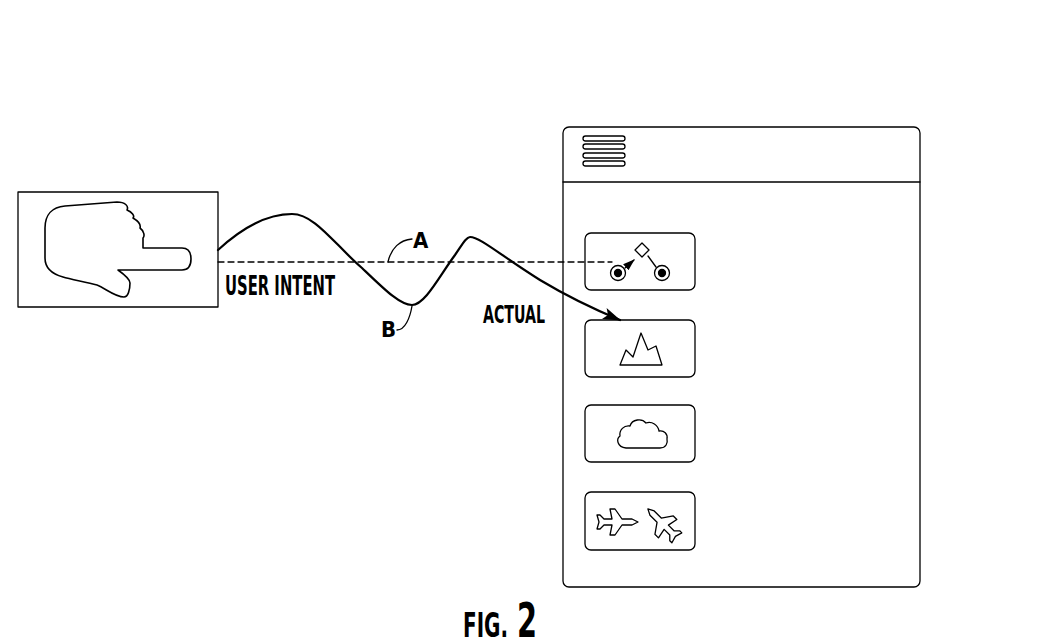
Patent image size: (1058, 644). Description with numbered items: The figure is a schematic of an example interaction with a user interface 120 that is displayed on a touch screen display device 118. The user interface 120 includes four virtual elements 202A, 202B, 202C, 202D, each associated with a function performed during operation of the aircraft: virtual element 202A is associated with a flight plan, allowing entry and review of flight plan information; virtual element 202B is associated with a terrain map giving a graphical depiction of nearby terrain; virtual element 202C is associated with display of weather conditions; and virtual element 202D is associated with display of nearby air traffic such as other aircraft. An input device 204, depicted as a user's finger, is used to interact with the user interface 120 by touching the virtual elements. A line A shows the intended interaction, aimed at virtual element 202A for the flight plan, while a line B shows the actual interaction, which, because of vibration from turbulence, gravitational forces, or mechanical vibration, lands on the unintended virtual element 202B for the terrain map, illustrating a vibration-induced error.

The touch screen display device 118 is at (747, 303).
The user interface 120 is at (809, 150).
The virtual element 202A is at (820, 247).
The virtual element 202B is at (820, 327).
The virtual element 202C is at (820, 407).
The virtual element 202D is at (820, 494).
The input device 204 is at (101, 196).